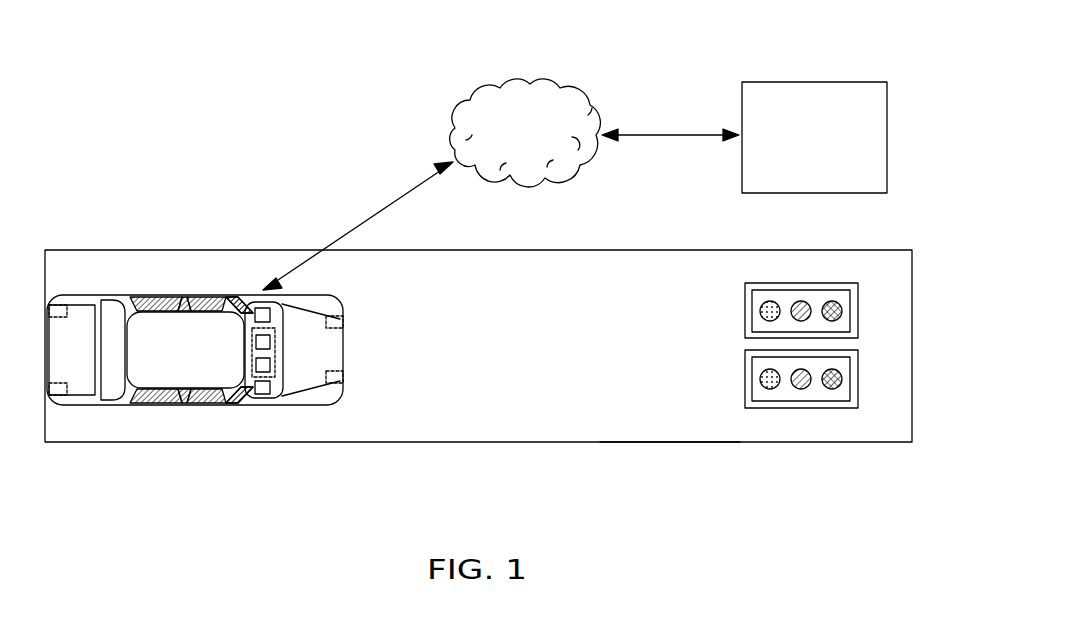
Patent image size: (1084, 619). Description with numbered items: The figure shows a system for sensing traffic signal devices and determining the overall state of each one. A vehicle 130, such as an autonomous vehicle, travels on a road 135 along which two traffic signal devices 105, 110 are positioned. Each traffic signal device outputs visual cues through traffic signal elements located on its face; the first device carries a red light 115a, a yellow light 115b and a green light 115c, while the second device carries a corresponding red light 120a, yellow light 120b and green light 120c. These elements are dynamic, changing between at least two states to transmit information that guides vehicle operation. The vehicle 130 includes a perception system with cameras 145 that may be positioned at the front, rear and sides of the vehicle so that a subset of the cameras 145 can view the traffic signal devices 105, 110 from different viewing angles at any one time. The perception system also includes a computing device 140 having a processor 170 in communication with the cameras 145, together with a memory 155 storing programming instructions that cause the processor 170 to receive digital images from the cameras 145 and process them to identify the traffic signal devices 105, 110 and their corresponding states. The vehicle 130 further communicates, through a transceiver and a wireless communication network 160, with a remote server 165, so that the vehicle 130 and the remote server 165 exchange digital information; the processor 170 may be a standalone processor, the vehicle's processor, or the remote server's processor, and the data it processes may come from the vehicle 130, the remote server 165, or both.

The traffic signal device 105 is at (858, 312).
The traffic signal device 110 is at (858, 380).
The red light 115a is at (834, 302).
The yellow light 115b is at (799, 302).
The green light 115c is at (767, 302).
The red light 120a is at (834, 388).
The yellow light 120b is at (800, 388).
The green light 120c is at (768, 388).
The vehicle 130 is at (108, 295).
The road 135 is at (152, 425).
The computing device 140 is at (280, 338).
The cameras 145 is at (60, 302).
The memory 155 is at (243, 300).
The wireless communication network 160 is at (540, 82).
The remote server 165 is at (820, 82).
The processor 170 is at (231, 405).